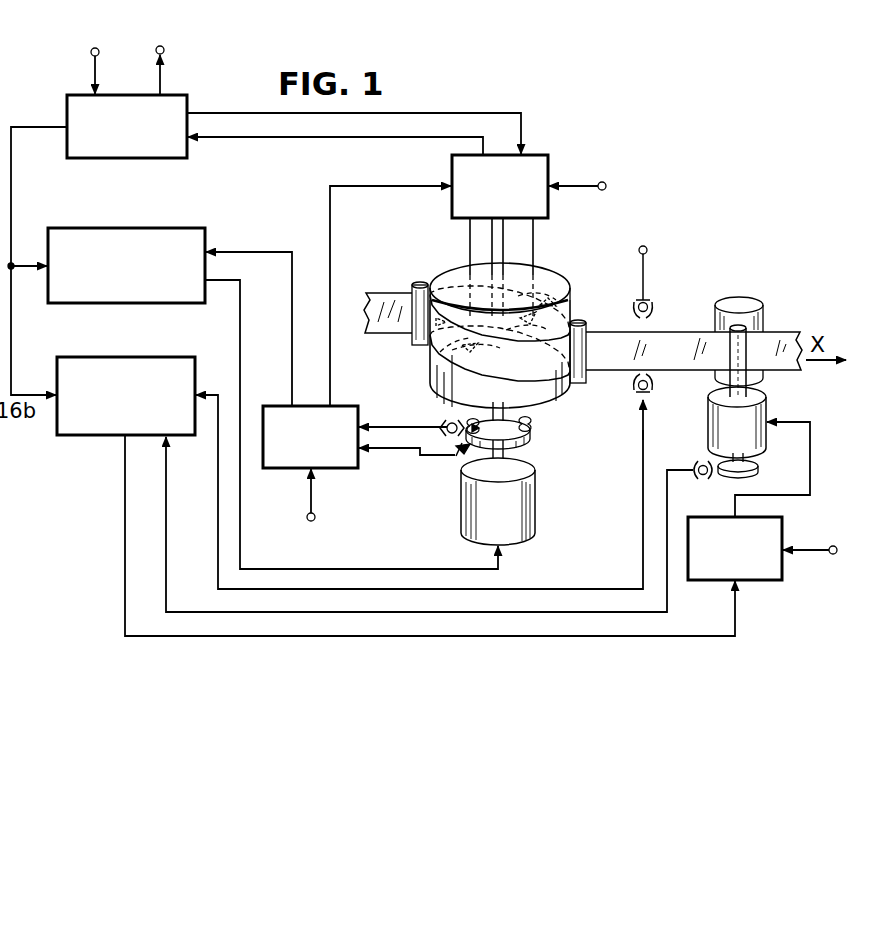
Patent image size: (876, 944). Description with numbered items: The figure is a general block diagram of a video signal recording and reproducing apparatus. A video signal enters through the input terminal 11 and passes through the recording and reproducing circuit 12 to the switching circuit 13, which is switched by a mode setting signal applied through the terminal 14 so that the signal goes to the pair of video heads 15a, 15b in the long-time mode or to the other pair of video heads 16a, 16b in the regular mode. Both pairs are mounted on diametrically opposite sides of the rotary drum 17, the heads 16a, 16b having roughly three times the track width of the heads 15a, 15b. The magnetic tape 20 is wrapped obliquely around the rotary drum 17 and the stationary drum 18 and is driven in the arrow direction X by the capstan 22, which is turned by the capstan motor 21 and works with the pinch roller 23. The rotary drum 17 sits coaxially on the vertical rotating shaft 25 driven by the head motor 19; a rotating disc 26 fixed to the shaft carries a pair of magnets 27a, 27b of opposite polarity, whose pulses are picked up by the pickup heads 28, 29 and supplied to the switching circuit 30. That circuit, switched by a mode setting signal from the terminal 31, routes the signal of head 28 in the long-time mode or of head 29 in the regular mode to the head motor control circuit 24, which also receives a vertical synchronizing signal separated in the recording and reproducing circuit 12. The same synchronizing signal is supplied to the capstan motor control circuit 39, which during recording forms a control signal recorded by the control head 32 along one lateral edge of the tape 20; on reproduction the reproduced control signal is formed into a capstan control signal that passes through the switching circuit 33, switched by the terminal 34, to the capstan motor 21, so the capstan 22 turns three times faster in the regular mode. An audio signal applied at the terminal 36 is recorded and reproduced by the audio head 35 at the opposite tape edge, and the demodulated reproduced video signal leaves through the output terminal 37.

The input terminal 11 is at (91, 50).
The recording and reproducing circuit 12 is at (67, 97).
The switching circuit 13 is at (540, 155).
The terminal 14 is at (602, 182).
The video head 15a is at (440, 366).
The video head 15b is at (535, 276).
The video head 16a is at (440, 346).
The video head 16b is at (548, 302).
The rotary drum 17 is at (447, 275).
The stationary drum 18 is at (562, 385).
The head motor 19 is at (536, 508).
The magnetic tape 20 is at (686, 332).
The capstan motor 21 is at (767, 416).
The capstan 22 is at (748, 347).
The pinch roller 23 is at (735, 298).
The head motor control circuit 24 is at (100, 228).
The rotating shaft 25 is at (505, 468).
The rotating disc 26 is at (530, 440).
The magnet 27a is at (458, 426).
The magnet 27b is at (532, 424).
The pickup head 28 is at (456, 462).
The pickup head 29 is at (448, 436).
The switching circuit 30 is at (270, 406).
The terminal 31 is at (306, 517).
The control head 32 is at (652, 393).
The switching circuit 33 is at (706, 517).
The terminal 34 is at (831, 546).
The audio head 35 is at (650, 305).
The terminal 36 is at (643, 246).
The output terminal 37 is at (164, 50).
The capstan motor control circuit 39 is at (104, 357).